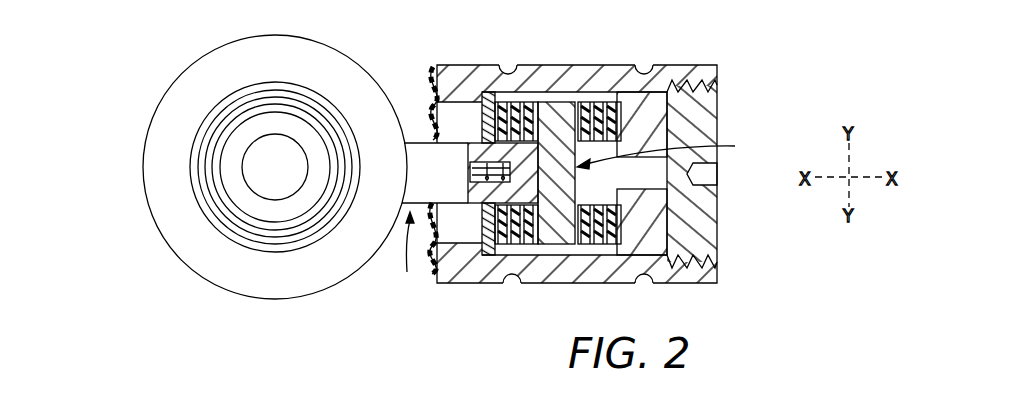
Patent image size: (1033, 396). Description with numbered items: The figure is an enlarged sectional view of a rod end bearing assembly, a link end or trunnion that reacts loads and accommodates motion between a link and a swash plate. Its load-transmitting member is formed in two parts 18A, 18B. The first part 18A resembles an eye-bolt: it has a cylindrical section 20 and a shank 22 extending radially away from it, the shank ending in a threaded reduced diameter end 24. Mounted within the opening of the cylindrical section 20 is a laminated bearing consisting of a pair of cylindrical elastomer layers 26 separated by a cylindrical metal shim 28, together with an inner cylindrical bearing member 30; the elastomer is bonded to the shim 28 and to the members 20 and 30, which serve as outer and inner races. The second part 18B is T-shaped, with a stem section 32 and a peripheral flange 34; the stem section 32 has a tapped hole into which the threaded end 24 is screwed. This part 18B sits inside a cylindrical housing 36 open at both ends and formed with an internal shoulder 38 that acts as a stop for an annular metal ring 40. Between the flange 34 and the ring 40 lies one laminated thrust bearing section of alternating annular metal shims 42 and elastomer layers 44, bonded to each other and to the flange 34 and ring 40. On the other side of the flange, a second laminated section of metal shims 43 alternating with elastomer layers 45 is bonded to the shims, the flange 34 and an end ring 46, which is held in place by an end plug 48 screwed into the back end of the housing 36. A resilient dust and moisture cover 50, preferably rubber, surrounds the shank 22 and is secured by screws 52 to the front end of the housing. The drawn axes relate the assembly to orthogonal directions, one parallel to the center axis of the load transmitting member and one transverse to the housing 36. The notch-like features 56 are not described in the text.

The first part of load-transmitting member 18A is at (406, 256).
The second part of load-transmitting member 18B is at (678, 152).
The cylindrical section 20 is at (160, 98).
The shank 22 is at (454, 140).
The threaded reduced diameter end 24 is at (484, 164).
The cylindrical elastomer layers 26 is at (214, 140).
The cylindrical metal shim 28 is at (203, 155).
The inner cylindrical bearing member 30 is at (242, 166).
The stem section 32 is at (478, 203).
The peripheral flange 34 is at (563, 102).
The cylindrical housing 36 is at (605, 162).
The internal shoulder 38 is at (487, 255).
The annular metal ring 40 is at (488, 91).
The metal shims 42 is at (527, 102).
The metal shims 43 is at (610, 102).
The elastomer material layers 44 is at (530, 244).
The elastomer layers 45 is at (606, 244).
The end ring 46 is at (653, 118).
The end plug 48 is at (703, 210).
The resilient dust and moisture cover 50 is at (433, 67).
The screws 52 is at (430, 75).
The notch 56 is at (646, 65).